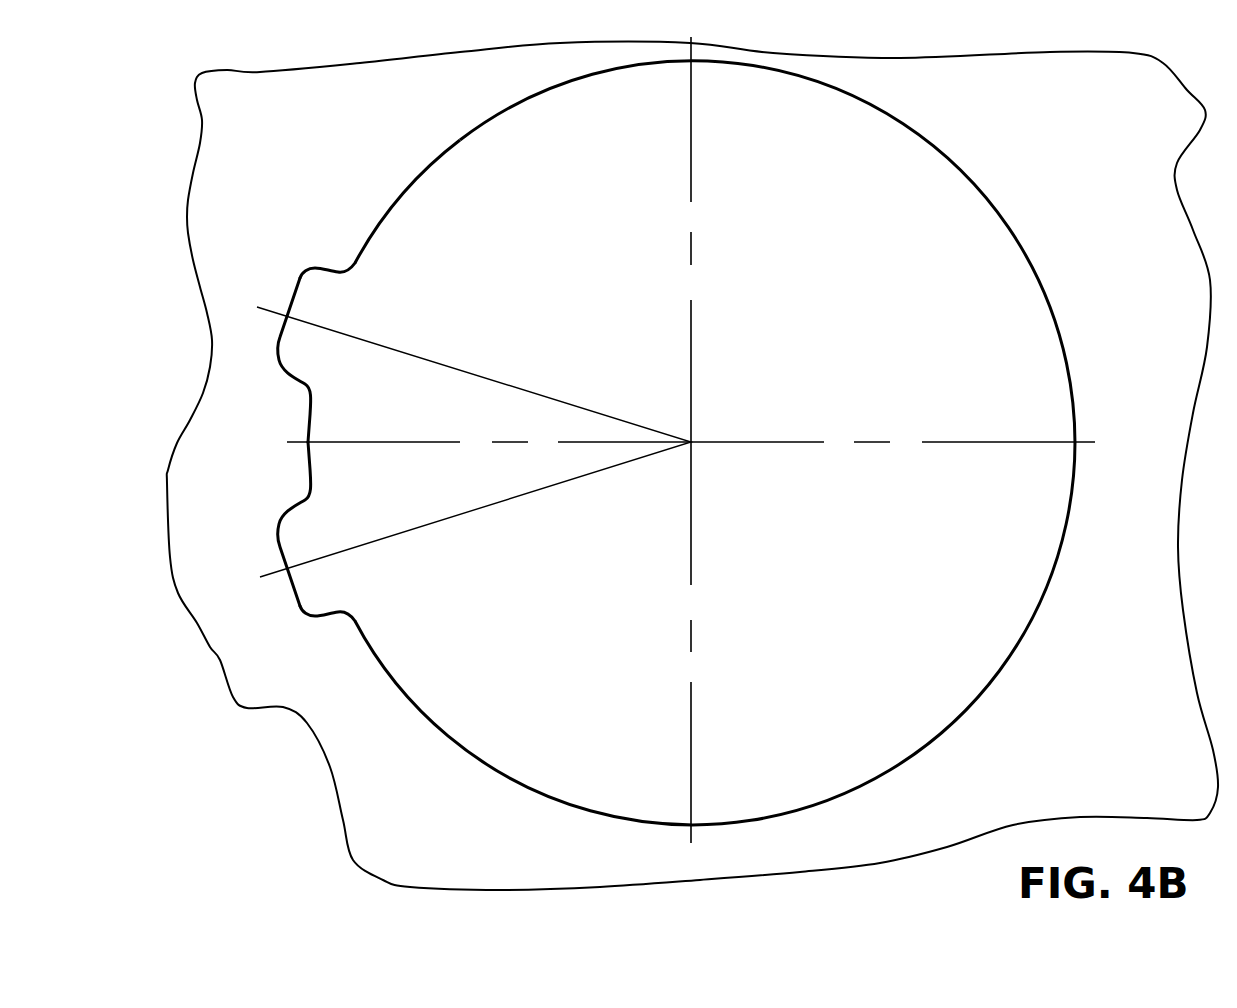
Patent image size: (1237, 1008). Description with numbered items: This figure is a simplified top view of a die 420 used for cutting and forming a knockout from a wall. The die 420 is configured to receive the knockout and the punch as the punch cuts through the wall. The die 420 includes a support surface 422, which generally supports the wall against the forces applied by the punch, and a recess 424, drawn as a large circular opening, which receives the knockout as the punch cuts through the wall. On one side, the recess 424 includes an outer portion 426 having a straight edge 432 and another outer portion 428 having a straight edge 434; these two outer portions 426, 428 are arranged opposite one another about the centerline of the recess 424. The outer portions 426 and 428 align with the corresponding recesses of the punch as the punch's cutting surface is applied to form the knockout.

The die 420 is at (315, 775).
The support surface 422 is at (715, 443).
The recess 424 is at (404, 206).
The outer portion 426 is at (284, 270).
The outer portion 428 is at (285, 616).
The straight edge 432 is at (262, 323).
The straight edge 434 is at (264, 563).